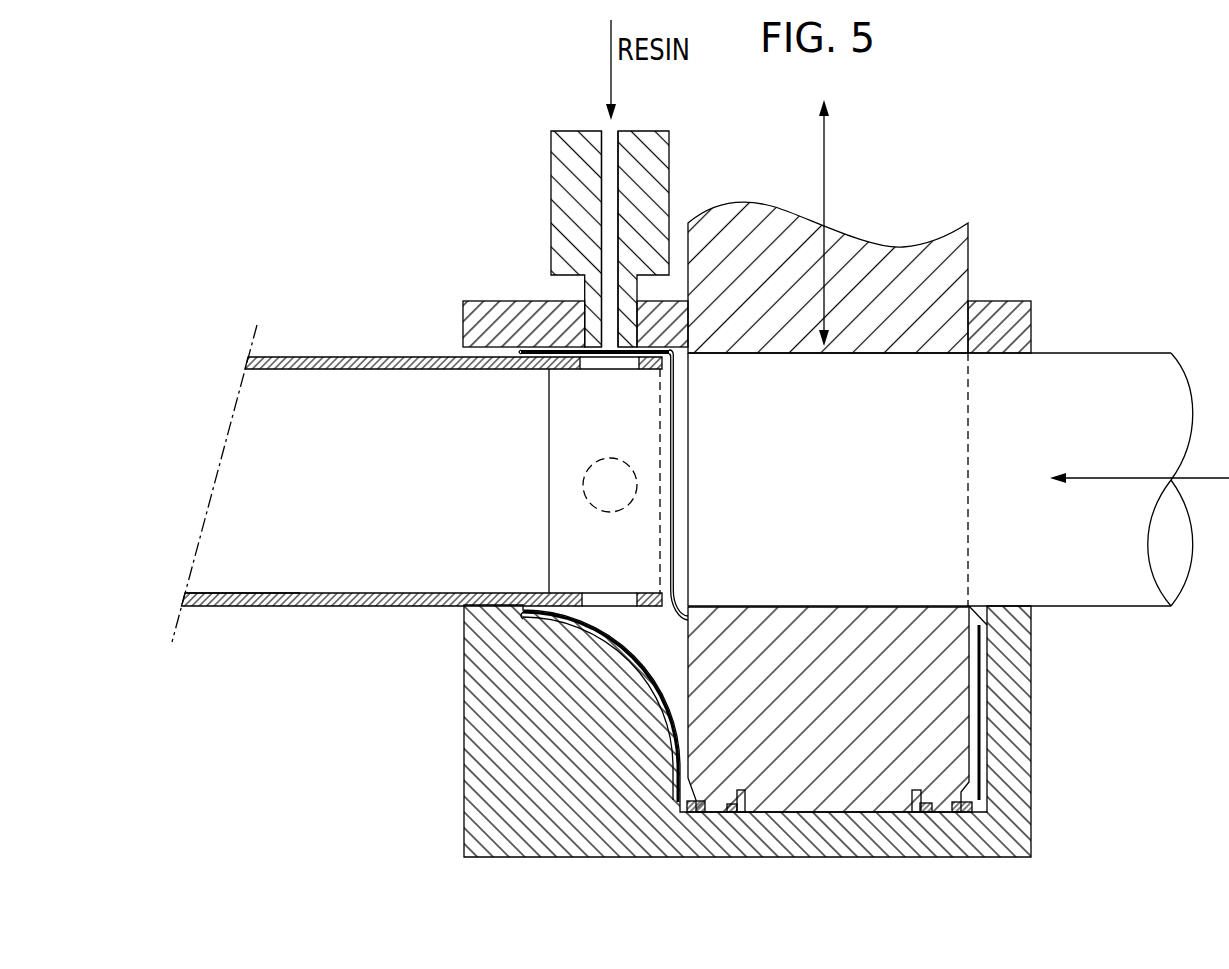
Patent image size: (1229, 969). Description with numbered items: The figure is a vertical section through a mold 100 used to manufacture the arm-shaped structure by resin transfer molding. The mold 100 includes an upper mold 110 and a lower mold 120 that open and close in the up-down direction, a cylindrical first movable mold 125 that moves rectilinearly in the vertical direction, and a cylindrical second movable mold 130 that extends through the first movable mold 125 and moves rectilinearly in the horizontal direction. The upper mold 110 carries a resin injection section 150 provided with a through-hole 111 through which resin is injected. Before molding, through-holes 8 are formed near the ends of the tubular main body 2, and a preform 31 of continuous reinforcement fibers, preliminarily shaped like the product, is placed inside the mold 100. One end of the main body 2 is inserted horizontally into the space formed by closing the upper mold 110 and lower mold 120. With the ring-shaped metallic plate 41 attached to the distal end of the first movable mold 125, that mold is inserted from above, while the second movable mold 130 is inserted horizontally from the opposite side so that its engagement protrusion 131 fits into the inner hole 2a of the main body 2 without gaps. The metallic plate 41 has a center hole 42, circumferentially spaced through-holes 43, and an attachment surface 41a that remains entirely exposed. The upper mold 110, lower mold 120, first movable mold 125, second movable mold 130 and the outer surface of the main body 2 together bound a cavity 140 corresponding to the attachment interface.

The main body 2 is at (314, 344).
The inner hole 2a is at (321, 591).
The through-holes 8 is at (578, 363).
The preform 31 is at (547, 348).
The metallic plate 41 is at (990, 791).
The attachment surface 41a is at (696, 812).
The center hole 42 is at (915, 812).
The through-holes 43 is at (730, 812).
The mold 100 is at (1122, 176).
The upper mold 110 is at (483, 300).
The through-hole 111 is at (611, 337).
The lower mold 120 is at (565, 857).
The first movable mold 125 is at (982, 252).
The second movable mold 130 is at (1138, 345).
The engagement protrusion 131 is at (703, 608).
The cavity 140 is at (690, 364).
The resin injection section 150 is at (682, 153).